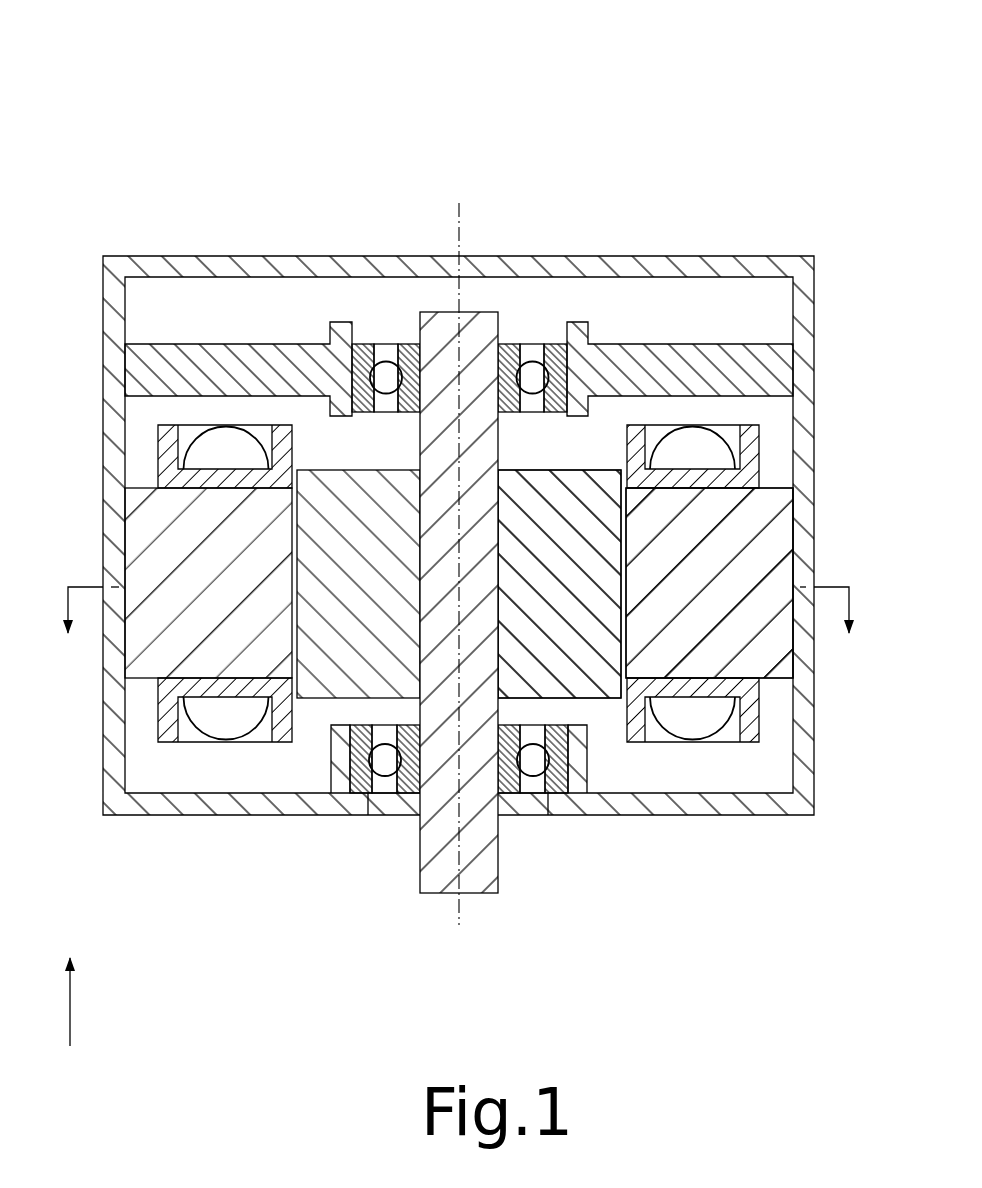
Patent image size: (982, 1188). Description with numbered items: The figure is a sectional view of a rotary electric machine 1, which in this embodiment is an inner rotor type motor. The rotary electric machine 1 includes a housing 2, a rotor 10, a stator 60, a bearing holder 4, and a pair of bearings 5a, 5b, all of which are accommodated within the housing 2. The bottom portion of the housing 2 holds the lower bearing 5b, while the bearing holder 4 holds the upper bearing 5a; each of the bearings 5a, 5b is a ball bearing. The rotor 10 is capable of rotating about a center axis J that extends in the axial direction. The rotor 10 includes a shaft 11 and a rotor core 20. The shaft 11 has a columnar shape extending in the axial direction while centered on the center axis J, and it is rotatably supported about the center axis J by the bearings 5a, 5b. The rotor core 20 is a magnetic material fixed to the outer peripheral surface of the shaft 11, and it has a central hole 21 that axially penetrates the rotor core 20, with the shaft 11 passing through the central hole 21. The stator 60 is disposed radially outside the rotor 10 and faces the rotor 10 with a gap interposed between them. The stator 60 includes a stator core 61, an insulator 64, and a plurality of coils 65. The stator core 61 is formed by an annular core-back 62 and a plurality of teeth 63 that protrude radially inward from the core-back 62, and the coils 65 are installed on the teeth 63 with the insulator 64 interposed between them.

The rotary electric machine 1 is at (500, 540).
The housing 2 is at (677, 270).
The bearing holder 4 is at (626, 358).
The bearing 5a is at (386, 368).
The bearing 5b is at (386, 767).
The rotor 10 is at (605, 713).
The shaft 11 is at (490, 863).
The rotor core 20 is at (318, 713).
The central hole 21 is at (497, 632).
The stator 60 is at (543, 548).
The stator core 61 is at (543, 585).
The core-back 62 is at (780, 643).
The teeth 63 is at (713, 545).
The insulator 64 is at (752, 478).
The coils 65 is at (704, 447).
The center axis J is at (459, 228).